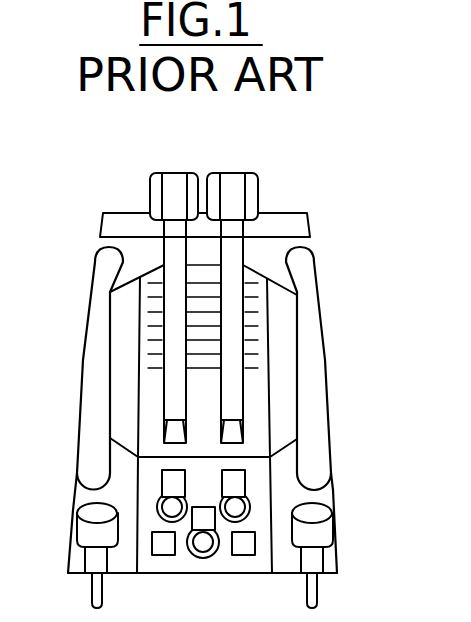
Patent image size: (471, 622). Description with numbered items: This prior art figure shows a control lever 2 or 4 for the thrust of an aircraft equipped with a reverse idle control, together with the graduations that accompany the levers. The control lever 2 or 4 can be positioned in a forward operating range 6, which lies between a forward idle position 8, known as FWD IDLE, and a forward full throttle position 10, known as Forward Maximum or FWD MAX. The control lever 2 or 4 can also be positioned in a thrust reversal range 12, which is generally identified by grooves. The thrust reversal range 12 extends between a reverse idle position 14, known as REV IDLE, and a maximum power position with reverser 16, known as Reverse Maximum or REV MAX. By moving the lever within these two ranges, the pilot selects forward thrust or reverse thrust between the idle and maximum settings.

The control lever 2 is at (235, 183).
The control lever 4 is at (172, 183).
The forward operating range 6 is at (270, 300).
The forward idle position 8 is at (253, 333).
The forward full throttle position 10 is at (250, 281).
The thrust reversal range 12 is at (270, 358).
The reverse idle position 14 is at (250, 353).
The maximum power position with reverser 16 is at (250, 367).